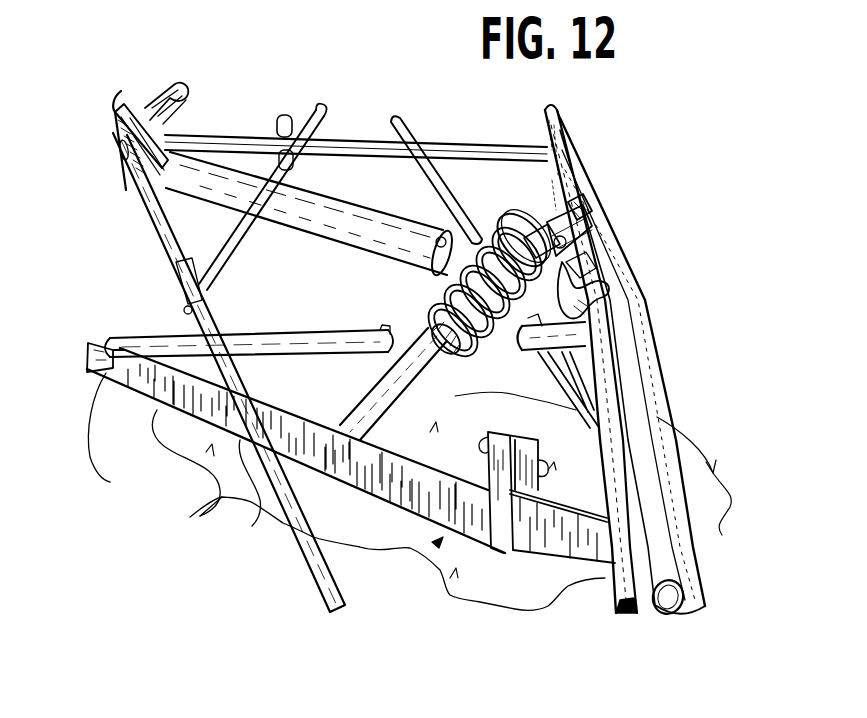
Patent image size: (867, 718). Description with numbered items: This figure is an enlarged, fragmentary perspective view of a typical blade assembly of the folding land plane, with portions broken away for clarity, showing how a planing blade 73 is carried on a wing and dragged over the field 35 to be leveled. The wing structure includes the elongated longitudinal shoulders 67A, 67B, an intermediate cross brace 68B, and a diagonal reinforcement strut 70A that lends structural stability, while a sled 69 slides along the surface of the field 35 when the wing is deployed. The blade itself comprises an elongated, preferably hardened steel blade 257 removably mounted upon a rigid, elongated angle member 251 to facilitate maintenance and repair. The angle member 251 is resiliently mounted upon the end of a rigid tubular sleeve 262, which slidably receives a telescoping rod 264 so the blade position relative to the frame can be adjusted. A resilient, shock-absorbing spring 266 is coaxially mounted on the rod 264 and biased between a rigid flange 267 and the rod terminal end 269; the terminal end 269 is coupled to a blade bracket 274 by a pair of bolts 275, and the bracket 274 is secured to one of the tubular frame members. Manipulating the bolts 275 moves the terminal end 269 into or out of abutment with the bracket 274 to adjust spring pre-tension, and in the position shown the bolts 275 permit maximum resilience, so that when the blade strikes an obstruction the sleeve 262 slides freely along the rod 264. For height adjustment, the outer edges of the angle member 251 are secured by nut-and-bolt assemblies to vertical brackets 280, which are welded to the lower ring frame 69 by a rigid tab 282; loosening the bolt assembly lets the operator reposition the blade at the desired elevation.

The field 35 is at (262, 512).
The longitudinal shoulder 67A is at (640, 380).
The longitudinal shoulder 67B is at (170, 92).
The intermediate cross brace 68B is at (412, 224).
The sled 69 is at (318, 104).
The reinforcement strut 70A is at (497, 148).
The planing blade 73 is at (443, 537).
The angle member 251 is at (96, 470).
The blade 257 is at (200, 516).
The tubular sleeve 262 is at (320, 387).
The telescoping rod 264 is at (494, 243).
The shock-absorbing spring 266 is at (443, 303).
The flange 267 is at (414, 358).
The terminal end 269 is at (572, 262).
The blade bracket 274 is at (576, 198).
The bolts 275 is at (564, 230).
The vertical bracket 280 is at (546, 432).
The tab 282 is at (548, 550).